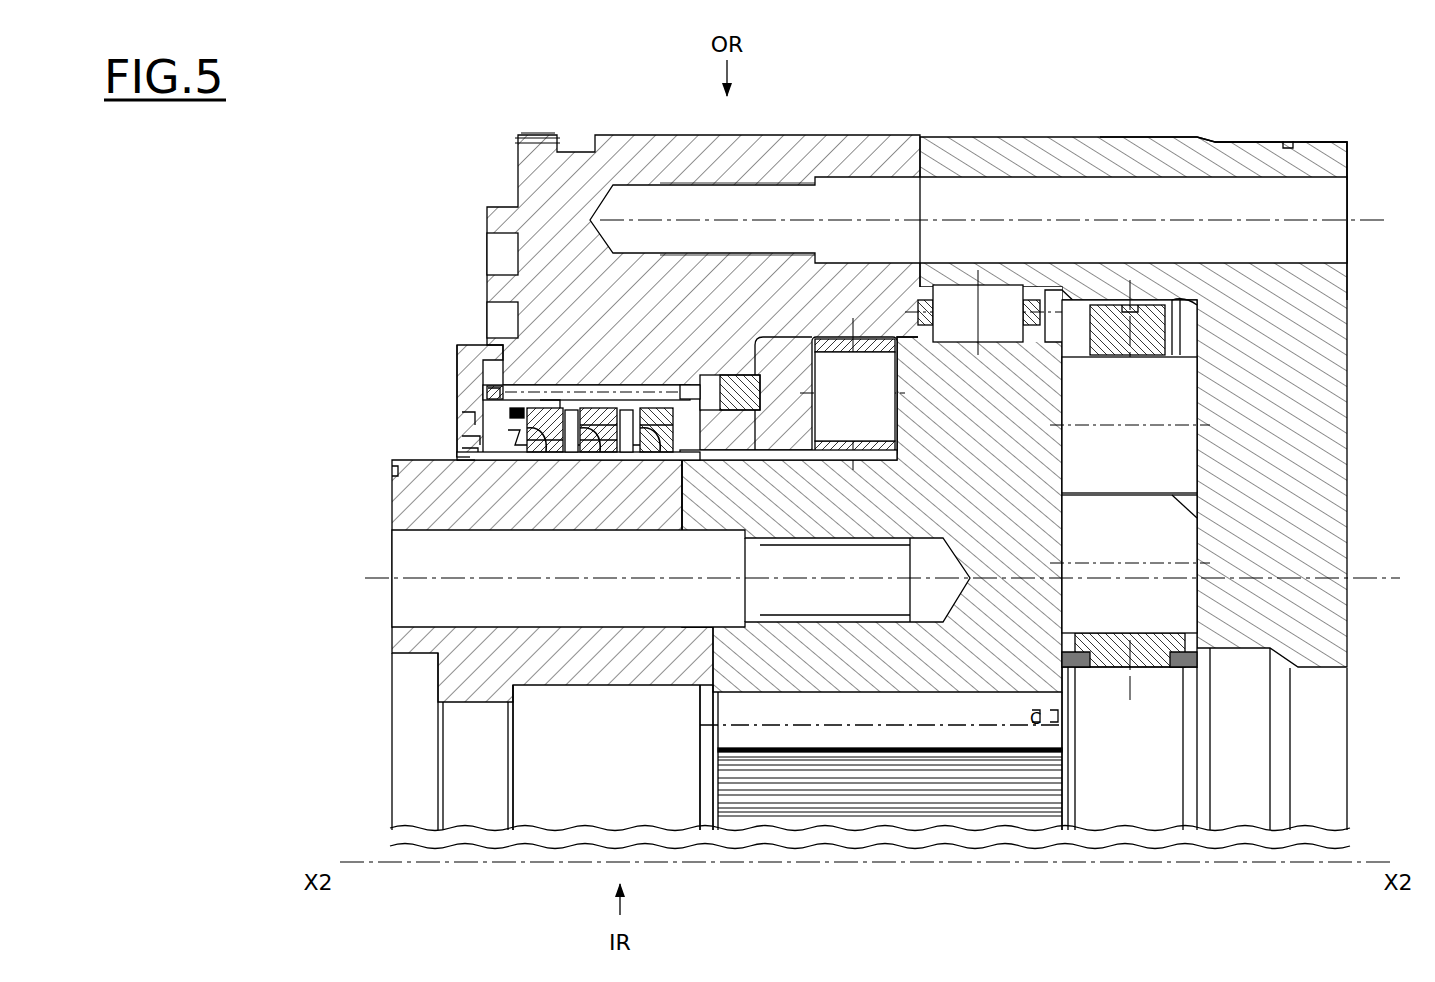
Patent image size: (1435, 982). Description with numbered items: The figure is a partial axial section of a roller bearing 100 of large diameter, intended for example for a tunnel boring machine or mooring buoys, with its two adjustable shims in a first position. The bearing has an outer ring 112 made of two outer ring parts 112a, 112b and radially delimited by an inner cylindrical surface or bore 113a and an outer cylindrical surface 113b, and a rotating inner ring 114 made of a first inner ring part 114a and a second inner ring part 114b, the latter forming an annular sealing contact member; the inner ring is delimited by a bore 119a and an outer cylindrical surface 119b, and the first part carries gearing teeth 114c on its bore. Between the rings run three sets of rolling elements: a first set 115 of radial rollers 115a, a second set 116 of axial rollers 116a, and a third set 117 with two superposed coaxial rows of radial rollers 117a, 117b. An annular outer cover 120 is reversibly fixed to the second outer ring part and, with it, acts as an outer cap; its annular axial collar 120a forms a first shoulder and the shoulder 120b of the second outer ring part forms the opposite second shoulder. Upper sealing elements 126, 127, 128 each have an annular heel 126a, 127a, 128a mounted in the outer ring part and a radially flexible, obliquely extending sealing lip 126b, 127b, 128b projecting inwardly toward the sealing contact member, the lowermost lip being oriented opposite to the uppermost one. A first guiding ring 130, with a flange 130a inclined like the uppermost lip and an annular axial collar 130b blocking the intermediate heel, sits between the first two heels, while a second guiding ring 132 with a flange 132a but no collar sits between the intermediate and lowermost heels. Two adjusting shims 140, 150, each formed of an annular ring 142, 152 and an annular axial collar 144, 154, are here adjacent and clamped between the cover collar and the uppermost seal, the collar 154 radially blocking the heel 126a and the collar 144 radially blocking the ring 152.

The roller bearing 100 is at (1355, 102).
The outer ring 112 is at (1078, 133).
The first outer ring part 112a is at (1345, 160).
The second outer ring part 112b is at (765, 160).
The inner cylindrical surface or bore 113a is at (458, 378).
The outer cylindrical surface 113b is at (1160, 137).
The inner ring 114 is at (1005, 698).
The first inner ring part 114a is at (846, 665).
The second inner ring part 114b is at (396, 637).
The gearing teeth 114c is at (935, 795).
The first set of rolling elements 115 is at (856, 338).
The rollers 115a is at (855, 396).
The second set of rolling elements 116 is at (1000, 283).
The rollers 116a is at (978, 312).
The third set of rolling elements 117 is at (1204, 458).
The rollers 117a is at (1130, 425).
The rollers 117b is at (1130, 564).
The inner cylindrical surface or bore 119a is at (668, 688).
The outer cylindrical surface 119b is at (622, 520).
The outer cover 120 is at (495, 350).
The annular axial collar 120a is at (472, 420).
The shoulder 120b is at (740, 462).
The uppermost sealing element 126 is at (522, 400).
The annular heel 126a is at (512, 408).
The sealing lip 126b is at (487, 452).
The intermediate sealing element 127 is at (663, 398).
The annular heel 127a is at (602, 398).
The sealing lip 127b is at (572, 456).
The lowermost sealing element 128 is at (668, 406).
The annular heel 128a is at (665, 398).
The sealing lip 128b is at (684, 455).
The first guiding ring 130 is at (573, 398).
The flange 130a is at (522, 455).
The annular axial collar 130b is at (548, 453).
The second guiding ring 132 is at (640, 456).
The flange 132a is at (603, 453).
The first adjusting shim 140 is at (475, 440).
The annular ring 142 is at (478, 405).
The annular axial collar 144 is at (470, 452).
The second adjusting shim 150 is at (558, 402).
The annular ring 152 is at (497, 395).
The annular axial collar 154 is at (490, 462).